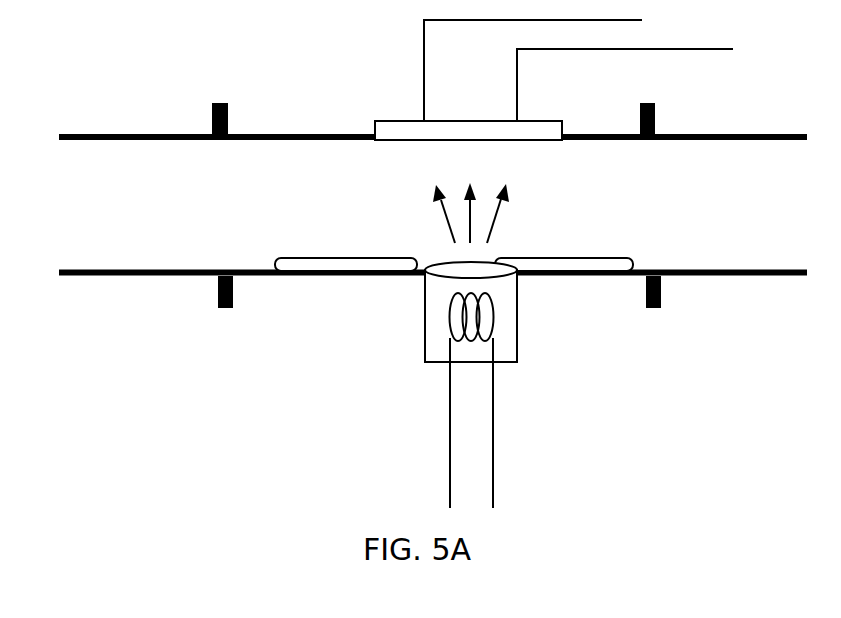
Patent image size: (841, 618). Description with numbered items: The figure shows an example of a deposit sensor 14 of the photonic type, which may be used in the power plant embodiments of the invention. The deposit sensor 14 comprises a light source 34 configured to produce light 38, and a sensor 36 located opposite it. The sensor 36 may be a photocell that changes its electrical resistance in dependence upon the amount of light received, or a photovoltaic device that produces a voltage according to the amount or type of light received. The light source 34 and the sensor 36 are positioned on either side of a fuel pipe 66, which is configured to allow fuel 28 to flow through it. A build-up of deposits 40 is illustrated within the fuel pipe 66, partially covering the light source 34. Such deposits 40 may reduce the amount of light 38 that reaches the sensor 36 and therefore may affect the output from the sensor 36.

The deposit sensor 14 is at (590, 330).
The fuel 28 is at (105, 202).
The light source 34 is at (515, 363).
The sensor 36 is at (395, 120).
The light 38 is at (494, 226).
The deposits 40 is at (318, 257).
The fuel pipe 66 is at (372, 278).